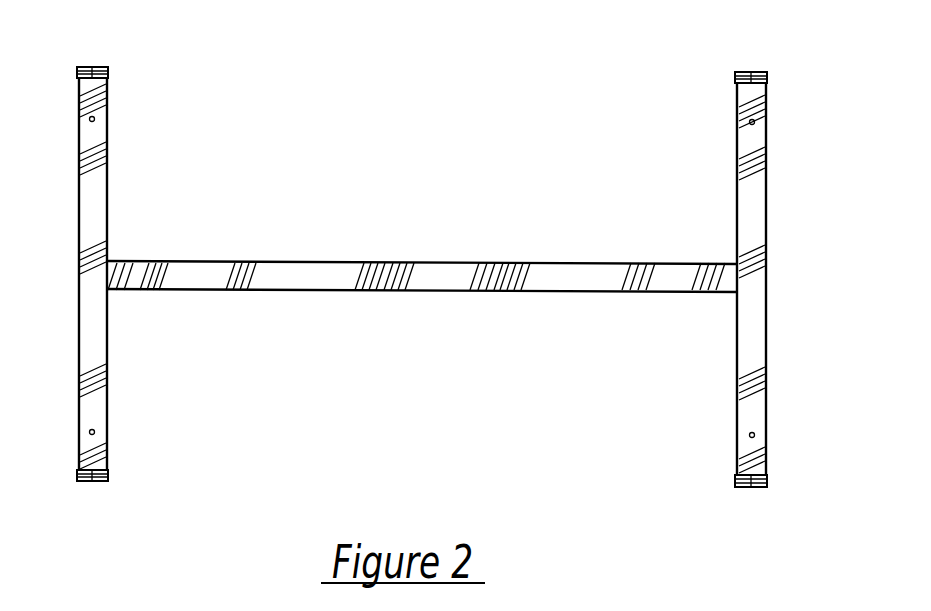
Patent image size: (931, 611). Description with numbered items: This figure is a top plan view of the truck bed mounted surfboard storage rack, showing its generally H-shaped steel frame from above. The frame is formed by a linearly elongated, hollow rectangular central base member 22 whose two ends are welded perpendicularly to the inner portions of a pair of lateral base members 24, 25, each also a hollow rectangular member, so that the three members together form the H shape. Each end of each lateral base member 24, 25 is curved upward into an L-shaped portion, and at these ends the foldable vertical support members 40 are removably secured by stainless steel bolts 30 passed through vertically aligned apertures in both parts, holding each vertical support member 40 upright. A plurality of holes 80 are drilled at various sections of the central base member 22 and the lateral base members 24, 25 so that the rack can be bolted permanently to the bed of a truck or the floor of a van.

The central base member 22 is at (426, 283).
The lateral base member 24 is at (79, 249).
The lateral base member 25 is at (766, 191).
The stainless steel bolt 30 is at (92, 67).
The foldable vertical support member 40 is at (84, 67).
The hole 80 is at (89, 119).